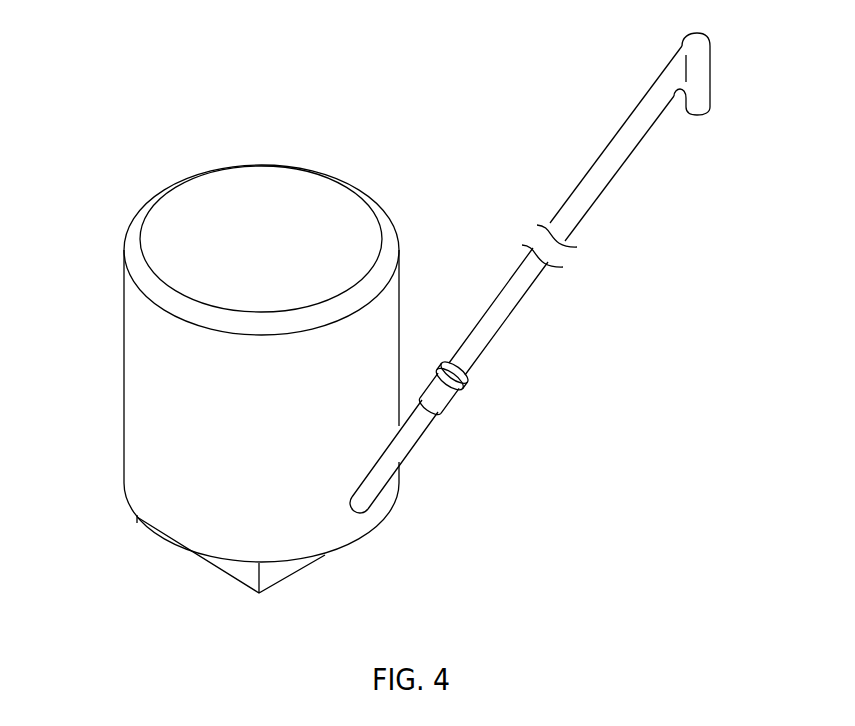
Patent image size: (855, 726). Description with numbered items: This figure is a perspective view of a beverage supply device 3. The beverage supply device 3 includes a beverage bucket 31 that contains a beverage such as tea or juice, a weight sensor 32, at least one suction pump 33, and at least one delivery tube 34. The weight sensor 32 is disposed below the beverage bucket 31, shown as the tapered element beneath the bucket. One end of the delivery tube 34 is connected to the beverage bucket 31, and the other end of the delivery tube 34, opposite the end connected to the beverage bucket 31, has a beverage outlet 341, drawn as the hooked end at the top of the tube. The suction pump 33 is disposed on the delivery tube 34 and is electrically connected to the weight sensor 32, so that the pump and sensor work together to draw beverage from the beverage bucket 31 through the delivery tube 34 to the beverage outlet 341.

The beverage supply device 3 is at (95, 166).
The beverage bucket 31 is at (140, 410).
The weight sensor 32 is at (240, 570).
The suction pump 33 is at (457, 390).
The delivery tube 34 is at (602, 170).
The beverage outlet 341 is at (700, 102).